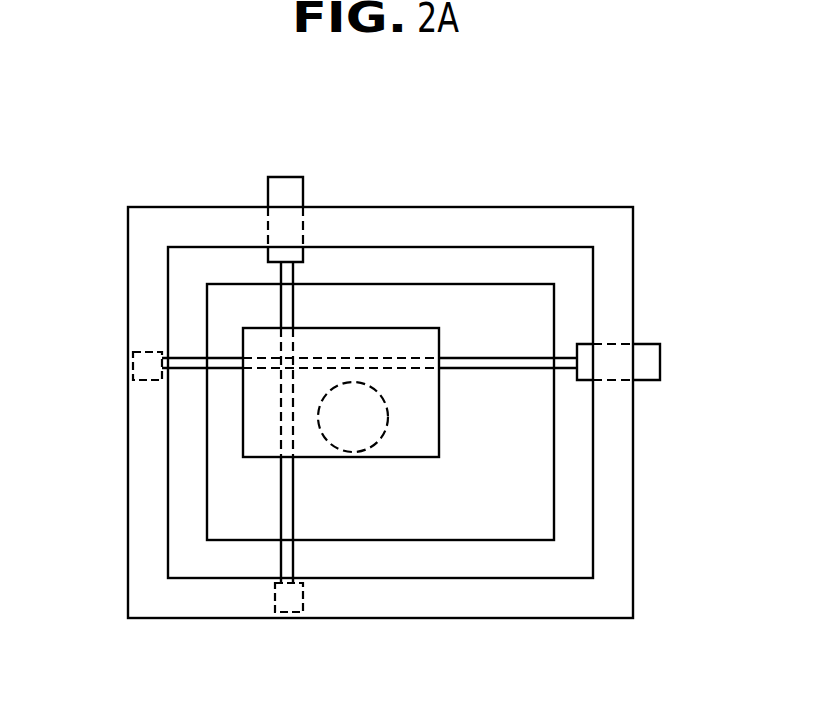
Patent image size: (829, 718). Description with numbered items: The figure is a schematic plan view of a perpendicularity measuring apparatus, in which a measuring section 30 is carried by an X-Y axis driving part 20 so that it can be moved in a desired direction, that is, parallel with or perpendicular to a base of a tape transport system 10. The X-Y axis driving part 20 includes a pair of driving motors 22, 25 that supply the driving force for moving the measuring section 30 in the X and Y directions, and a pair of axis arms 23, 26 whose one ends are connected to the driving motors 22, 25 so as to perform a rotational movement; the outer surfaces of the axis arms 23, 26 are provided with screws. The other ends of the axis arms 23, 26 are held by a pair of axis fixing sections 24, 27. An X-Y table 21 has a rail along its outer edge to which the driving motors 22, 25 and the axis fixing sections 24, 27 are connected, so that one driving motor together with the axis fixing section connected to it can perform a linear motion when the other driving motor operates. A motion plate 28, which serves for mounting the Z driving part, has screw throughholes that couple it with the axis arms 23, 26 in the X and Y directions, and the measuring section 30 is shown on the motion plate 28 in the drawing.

The tape transport system 10 is at (535, 522).
The X-Y axis driving part 20 is at (635, 214).
The X-Y table 21 is at (614, 286).
The driving motor 22 is at (651, 366).
The axis arm 23 is at (500, 368).
The axis fixing section 24 is at (146, 371).
The driving motor 25 is at (286, 184).
The axis arm 26 is at (282, 495).
The axis fixing section 27 is at (290, 605).
The motion plate 28 is at (414, 447).
The measuring section 30 is at (353, 440).